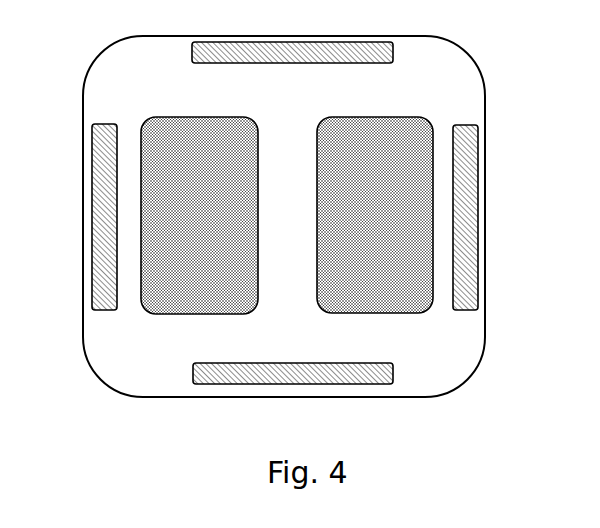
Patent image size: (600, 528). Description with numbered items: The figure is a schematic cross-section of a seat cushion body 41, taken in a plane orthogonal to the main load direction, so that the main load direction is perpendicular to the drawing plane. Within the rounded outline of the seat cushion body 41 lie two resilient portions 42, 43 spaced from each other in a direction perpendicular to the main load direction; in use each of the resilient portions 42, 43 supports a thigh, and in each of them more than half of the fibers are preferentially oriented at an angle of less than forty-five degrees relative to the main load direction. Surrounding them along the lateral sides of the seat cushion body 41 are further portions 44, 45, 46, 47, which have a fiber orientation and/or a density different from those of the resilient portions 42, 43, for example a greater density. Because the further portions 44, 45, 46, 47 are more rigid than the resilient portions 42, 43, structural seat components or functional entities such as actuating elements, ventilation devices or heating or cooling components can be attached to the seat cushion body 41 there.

The seat cushion body 41 is at (55, 50).
The resilient portion 42 is at (252, 117).
The resilient portion 43 is at (425, 118).
The further portion 44 is at (393, 43).
The further portion 45 is at (368, 386).
The further portion 46 is at (92, 182).
The further portion 47 is at (480, 188).